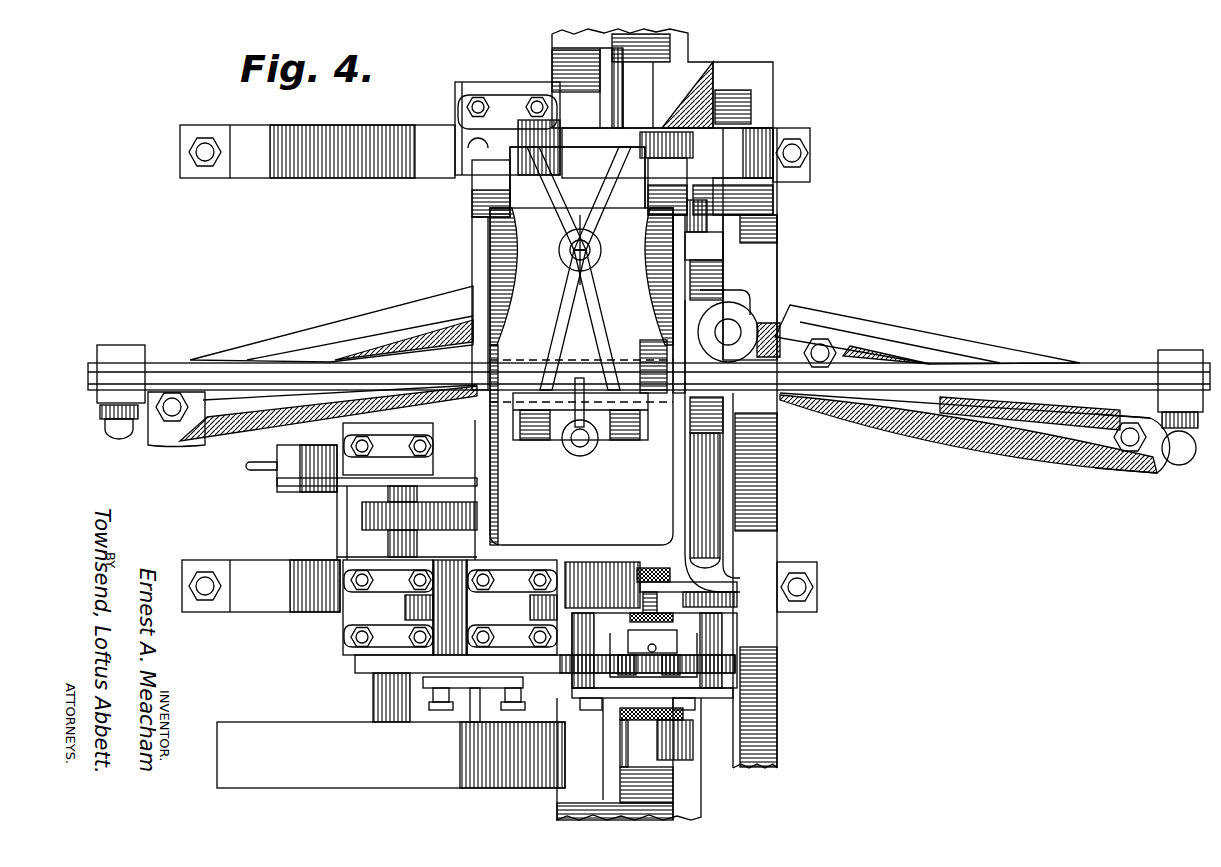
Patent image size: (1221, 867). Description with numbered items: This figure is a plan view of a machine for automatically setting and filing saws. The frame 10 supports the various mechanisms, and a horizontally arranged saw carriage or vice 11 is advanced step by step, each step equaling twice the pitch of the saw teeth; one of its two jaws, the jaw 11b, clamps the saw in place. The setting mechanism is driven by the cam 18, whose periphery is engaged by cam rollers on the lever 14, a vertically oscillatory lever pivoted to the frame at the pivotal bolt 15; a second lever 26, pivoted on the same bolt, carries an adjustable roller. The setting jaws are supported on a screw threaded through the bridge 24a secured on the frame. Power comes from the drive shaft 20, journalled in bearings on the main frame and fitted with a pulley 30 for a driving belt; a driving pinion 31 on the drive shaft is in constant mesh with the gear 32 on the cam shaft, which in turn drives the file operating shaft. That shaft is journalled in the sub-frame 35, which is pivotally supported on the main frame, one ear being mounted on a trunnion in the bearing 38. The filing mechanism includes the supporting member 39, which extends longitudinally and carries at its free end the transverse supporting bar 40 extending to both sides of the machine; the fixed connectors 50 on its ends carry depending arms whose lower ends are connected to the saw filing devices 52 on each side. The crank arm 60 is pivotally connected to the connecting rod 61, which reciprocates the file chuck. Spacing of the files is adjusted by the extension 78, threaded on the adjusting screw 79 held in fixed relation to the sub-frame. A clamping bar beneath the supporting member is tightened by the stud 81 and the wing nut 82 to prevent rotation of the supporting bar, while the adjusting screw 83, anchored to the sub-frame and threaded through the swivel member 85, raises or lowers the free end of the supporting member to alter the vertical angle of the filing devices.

The frame 10 is at (350, 130).
The saw carriage or vice 11 is at (722, 88).
The jaw 11b is at (762, 243).
The lever 14 is at (428, 683).
The pivotal bolt 15 is at (428, 695).
The cam 18 is at (462, 668).
The drive shaft 20 is at (388, 710).
The bridge 24a is at (738, 697).
The lever 26 is at (475, 700).
The pulley 30 is at (300, 775).
The driving pinion 31 is at (375, 512).
The gear 32 is at (440, 525).
The sub-frame 35 is at (658, 492).
The bearing 38 is at (490, 183).
The supporting member 39 is at (577, 241).
The transverse supporting bar 40 is at (1075, 372).
The fixed connectors 50 is at (122, 348).
The saw filing devices 52 is at (325, 325).
The crank arm 60 is at (762, 332).
The connecting rod 61 is at (395, 335).
The extension 78 is at (727, 535).
The adjusting screw 79 is at (735, 620).
The stud 81 is at (575, 248).
The wing nut 82 is at (578, 266).
The adjusting screw 83 is at (588, 405).
The swivel member 85 is at (553, 420).